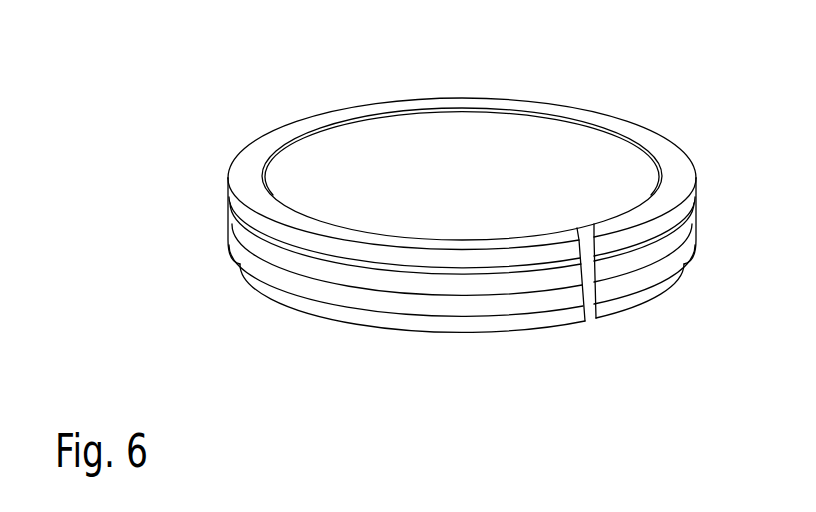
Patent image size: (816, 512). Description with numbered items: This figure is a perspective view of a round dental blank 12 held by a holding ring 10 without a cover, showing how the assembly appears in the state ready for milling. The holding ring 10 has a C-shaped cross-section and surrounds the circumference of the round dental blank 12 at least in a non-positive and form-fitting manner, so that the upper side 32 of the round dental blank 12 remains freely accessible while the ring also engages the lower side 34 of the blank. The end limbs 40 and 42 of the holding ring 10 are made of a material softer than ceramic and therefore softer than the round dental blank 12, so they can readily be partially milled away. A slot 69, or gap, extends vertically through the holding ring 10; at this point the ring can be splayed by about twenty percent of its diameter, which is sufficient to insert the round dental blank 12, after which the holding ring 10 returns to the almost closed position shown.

The holding ring 10 is at (484, 239).
The round dental blank 12 is at (477, 193).
The upper side 32 is at (562, 135).
The lower side 34 is at (564, 373).
The end limb 40 is at (671, 168).
The end limb 42 is at (432, 350).
The slot 69 is at (583, 292).